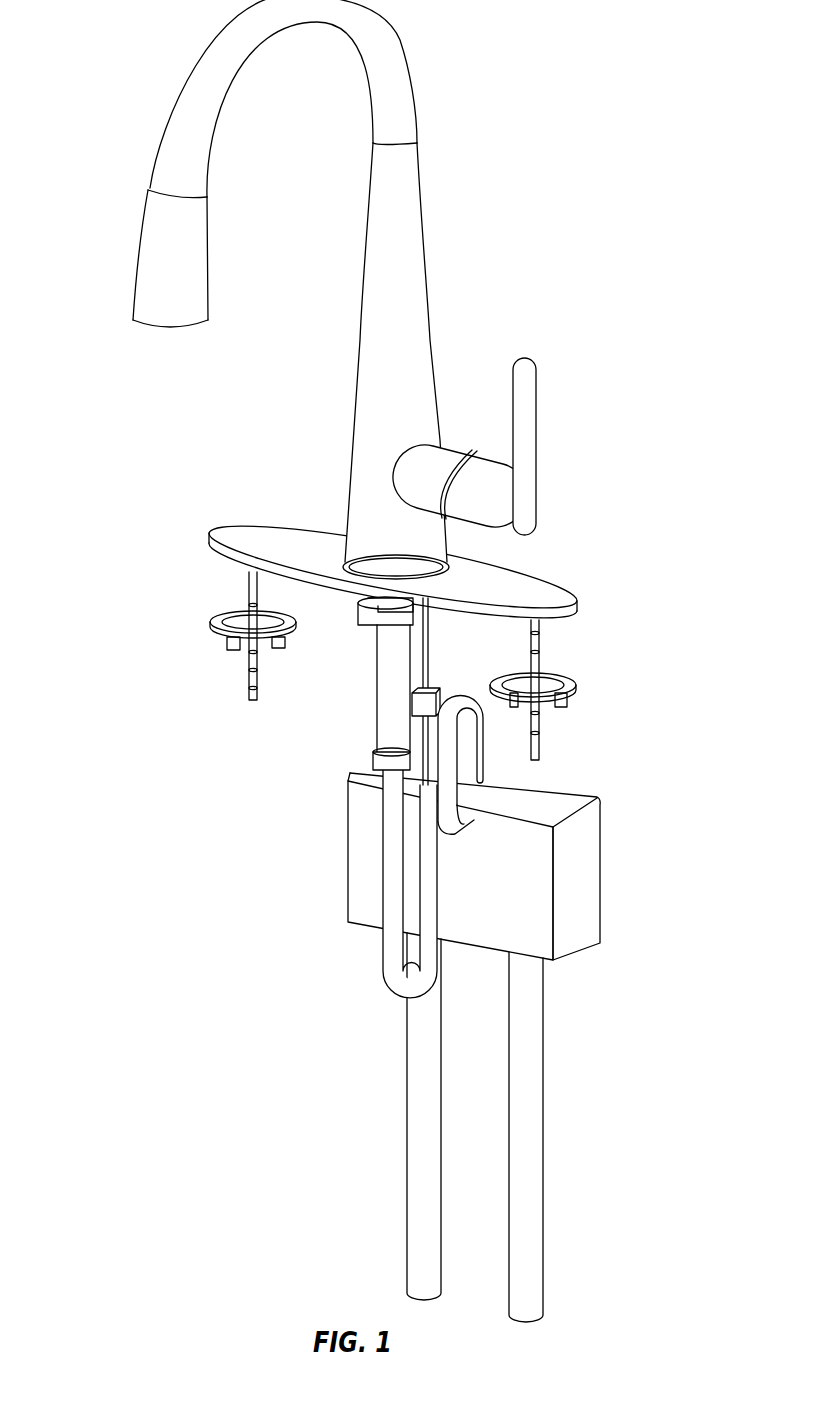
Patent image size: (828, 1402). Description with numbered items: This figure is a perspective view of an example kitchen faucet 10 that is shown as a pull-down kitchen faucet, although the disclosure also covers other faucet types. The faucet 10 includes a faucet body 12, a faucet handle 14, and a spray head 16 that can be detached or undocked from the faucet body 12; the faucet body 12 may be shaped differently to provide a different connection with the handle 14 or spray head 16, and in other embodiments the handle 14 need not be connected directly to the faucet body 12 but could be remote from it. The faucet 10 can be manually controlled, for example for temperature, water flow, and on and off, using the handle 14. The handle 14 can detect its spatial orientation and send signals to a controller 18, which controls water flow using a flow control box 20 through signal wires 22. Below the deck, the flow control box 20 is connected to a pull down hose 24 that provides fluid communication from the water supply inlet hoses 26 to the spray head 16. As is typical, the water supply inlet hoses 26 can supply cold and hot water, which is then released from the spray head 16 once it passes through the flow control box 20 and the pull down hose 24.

The faucet 10 is at (570, 190).
The faucet body 12 is at (357, 363).
The faucet handle 14 is at (534, 440).
The spray head 16 is at (137, 245).
The controller 18 is at (483, 700).
The flow control box 20 is at (601, 875).
The signal wires 22 is at (430, 657).
The pull down hose 24 is at (380, 847).
The water supply inlet hoses 26 is at (407, 1163).